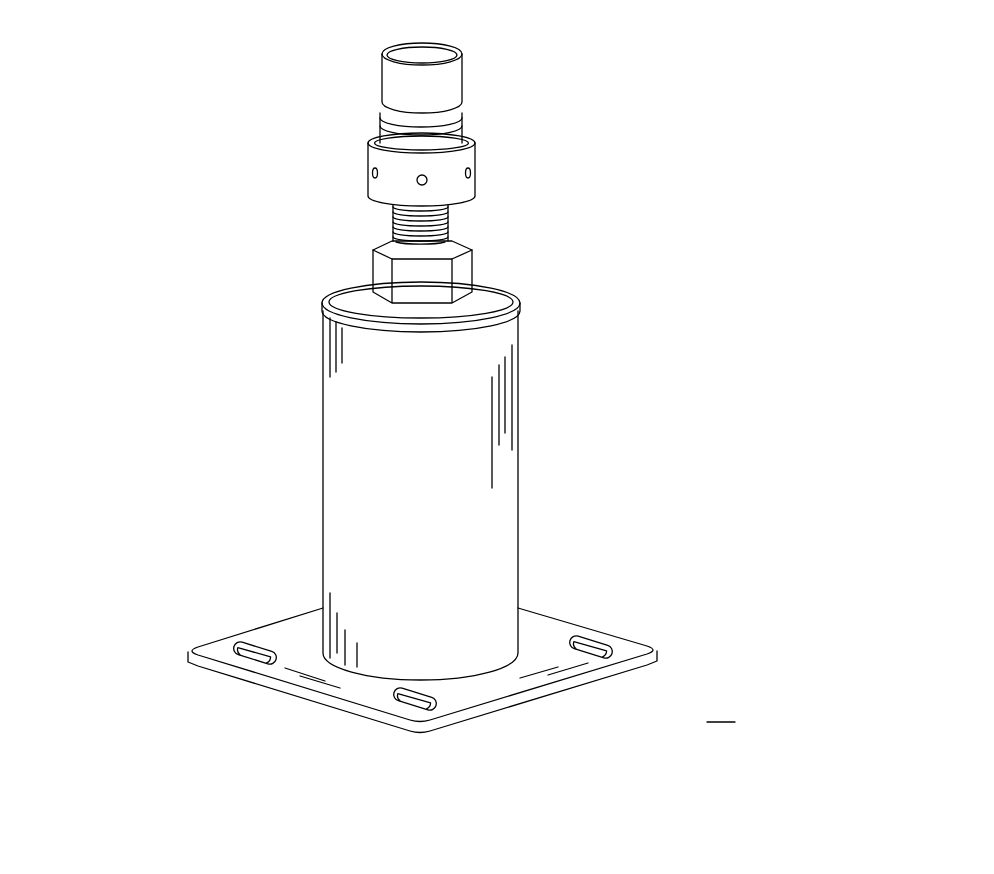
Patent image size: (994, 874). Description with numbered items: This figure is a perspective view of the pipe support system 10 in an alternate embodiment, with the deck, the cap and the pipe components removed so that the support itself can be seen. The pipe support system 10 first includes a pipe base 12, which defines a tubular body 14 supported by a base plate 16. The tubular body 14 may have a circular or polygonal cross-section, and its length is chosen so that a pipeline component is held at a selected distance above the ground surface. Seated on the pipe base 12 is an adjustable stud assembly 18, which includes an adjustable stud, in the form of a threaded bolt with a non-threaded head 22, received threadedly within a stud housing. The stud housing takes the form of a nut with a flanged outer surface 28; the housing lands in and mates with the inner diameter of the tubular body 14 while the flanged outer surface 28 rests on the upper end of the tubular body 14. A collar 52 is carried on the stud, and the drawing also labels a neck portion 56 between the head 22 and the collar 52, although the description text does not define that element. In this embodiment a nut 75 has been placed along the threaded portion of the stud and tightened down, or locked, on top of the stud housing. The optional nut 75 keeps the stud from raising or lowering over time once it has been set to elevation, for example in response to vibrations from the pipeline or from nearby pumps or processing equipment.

The pipe support system 10 is at (90, 203).
The pipe base 12 is at (246, 450).
The tubular body 14 is at (360, 432).
The base plate 16 is at (252, 638).
The adjustable stud assembly 18 is at (300, 264).
The head 22 is at (442, 88).
The flanged outer surface 28 is at (520, 300).
The collar 52 is at (478, 156).
The neck 56 is at (380, 113).
The nut 75 is at (473, 262).